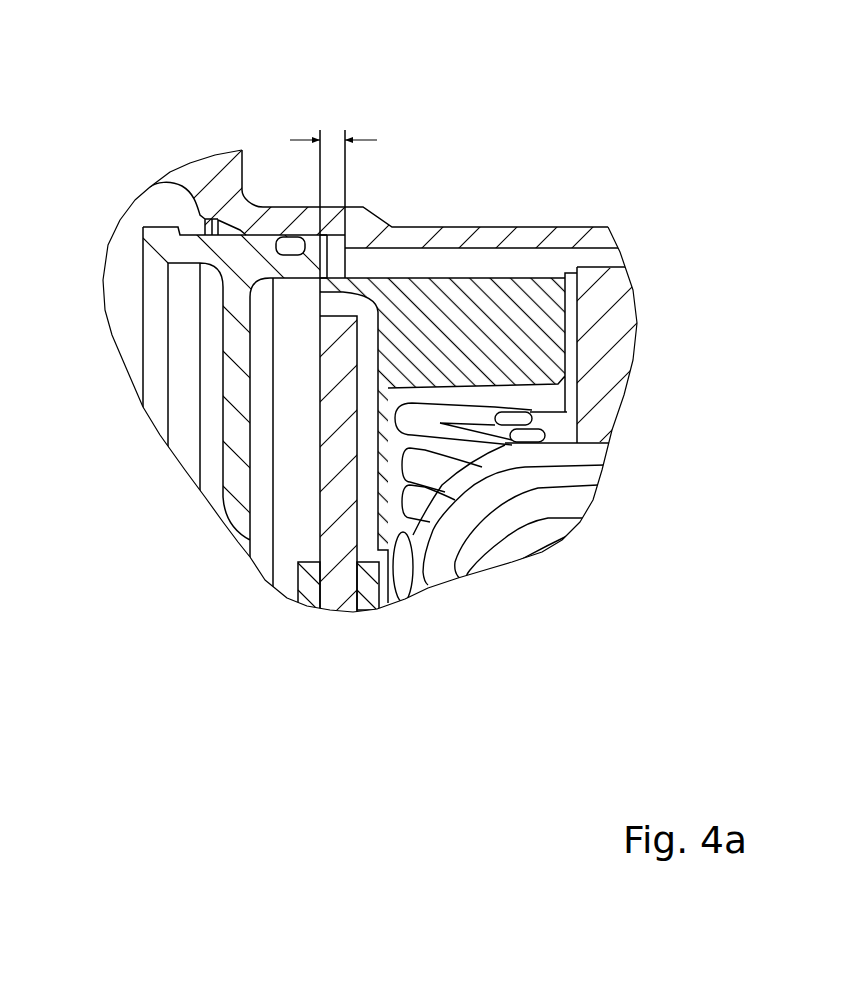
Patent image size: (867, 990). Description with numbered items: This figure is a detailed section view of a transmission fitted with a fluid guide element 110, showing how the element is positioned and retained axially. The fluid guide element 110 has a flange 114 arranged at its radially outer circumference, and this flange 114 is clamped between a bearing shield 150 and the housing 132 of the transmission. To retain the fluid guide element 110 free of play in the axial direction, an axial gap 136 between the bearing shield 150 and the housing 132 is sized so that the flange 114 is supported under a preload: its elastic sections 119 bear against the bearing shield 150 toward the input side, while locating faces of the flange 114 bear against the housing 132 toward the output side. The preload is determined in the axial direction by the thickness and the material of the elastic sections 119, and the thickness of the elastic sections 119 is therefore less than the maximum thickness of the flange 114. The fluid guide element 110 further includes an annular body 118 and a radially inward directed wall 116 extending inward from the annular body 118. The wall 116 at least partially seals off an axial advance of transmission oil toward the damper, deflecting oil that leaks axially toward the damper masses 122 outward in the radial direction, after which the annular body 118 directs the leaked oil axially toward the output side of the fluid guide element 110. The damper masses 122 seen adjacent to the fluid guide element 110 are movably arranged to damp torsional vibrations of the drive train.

The fluid guide element 110 is at (445, 277).
The flange 114 is at (337, 267).
The wall 116 is at (413, 575).
The annular body 118 is at (505, 327).
The elastic sections 119 is at (318, 232).
The damper masses 122 is at (340, 503).
The housing 132 is at (593, 237).
The axial gap 136 is at (375, 50).
The bearing shield 150 is at (168, 245).